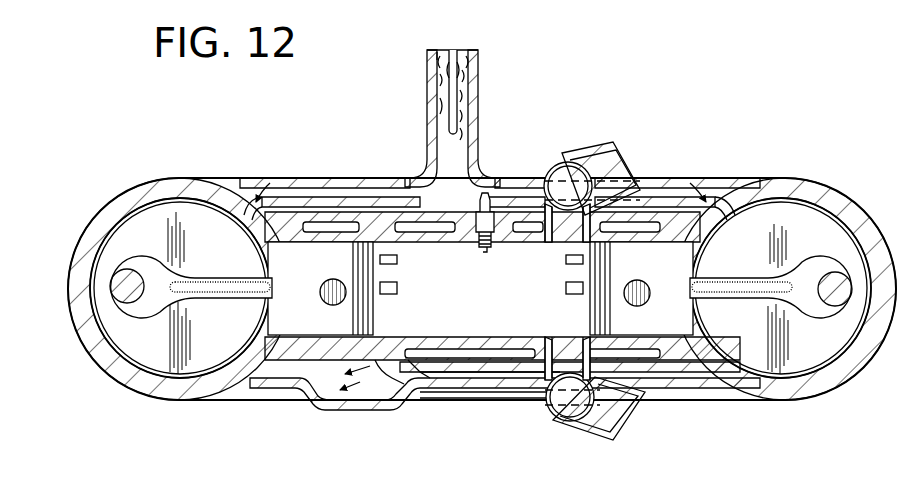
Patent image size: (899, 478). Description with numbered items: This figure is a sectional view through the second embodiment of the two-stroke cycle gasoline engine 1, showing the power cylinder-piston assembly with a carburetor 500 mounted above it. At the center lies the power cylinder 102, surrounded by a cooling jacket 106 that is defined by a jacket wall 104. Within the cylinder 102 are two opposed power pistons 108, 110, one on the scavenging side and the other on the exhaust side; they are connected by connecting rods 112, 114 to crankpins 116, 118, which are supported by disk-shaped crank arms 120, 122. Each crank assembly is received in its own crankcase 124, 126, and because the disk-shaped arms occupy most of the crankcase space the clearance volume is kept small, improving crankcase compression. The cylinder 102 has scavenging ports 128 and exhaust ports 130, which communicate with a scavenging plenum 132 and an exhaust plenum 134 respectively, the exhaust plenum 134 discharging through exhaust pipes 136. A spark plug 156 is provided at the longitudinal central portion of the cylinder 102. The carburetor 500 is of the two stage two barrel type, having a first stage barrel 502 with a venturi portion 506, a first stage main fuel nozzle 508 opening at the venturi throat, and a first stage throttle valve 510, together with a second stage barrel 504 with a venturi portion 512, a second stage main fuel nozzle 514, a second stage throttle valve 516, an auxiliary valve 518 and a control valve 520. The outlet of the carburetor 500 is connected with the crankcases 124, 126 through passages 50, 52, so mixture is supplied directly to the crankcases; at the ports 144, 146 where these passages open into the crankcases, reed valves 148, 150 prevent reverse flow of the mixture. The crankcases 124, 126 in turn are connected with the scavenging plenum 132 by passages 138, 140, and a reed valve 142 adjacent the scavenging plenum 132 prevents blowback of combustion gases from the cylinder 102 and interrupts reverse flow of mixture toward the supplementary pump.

The engine 1 is at (768, 181).
The passage 50 is at (341, 190).
The passage 52 is at (668, 185).
The power cylinder 102 is at (449, 338).
The jacket wall 104 is at (510, 388).
The cooling jacket 106 is at (526, 370).
The power piston 108 is at (399, 266).
The power piston 110 is at (564, 268).
The connecting rod 112 is at (197, 277).
The connecting rod 114 is at (735, 298).
The crankpin 116 is at (129, 270).
The crankpin 118 is at (828, 273).
The crank arm 120 is at (176, 370).
The crank arm 122 is at (808, 370).
The crankcase 124 is at (270, 332).
The crankcase 126 is at (688, 332).
The scavenging ports 128 is at (399, 300).
The exhaust ports 130 is at (565, 300).
The scavenging plenum 132 is at (402, 360).
The exhaust plenum 134 is at (562, 166).
The exhaust pipes 136 is at (616, 168).
The passage 138 is at (270, 378).
The passage 140 is at (461, 372).
The reed valve 142 is at (340, 380).
The port 144 is at (244, 227).
The port 146 is at (738, 228).
The reed valve 148 is at (256, 202).
The reed valve 150 is at (720, 217).
The spark plug 156 is at (480, 247).
The carburetor 500 is at (482, 64).
The first stage barrel 502 is at (441, 48).
The second stage barrel 504 is at (455, 46).
The venturi portion 506 is at (440, 58).
The first stage main fuel nozzle 508 is at (440, 80).
The first stage throttle valve 510 is at (436, 106).
The venturi portion 512 is at (470, 56).
The second stage main fuel nozzle 514 is at (466, 74).
The second stage throttle valve 516 is at (464, 114).
The auxiliary valve 518 is at (464, 92).
The control valve 520 is at (462, 135).